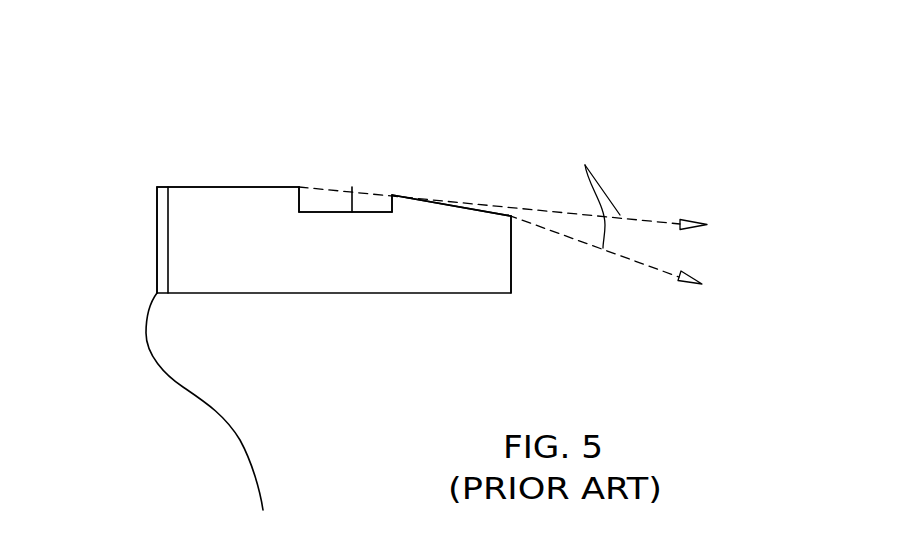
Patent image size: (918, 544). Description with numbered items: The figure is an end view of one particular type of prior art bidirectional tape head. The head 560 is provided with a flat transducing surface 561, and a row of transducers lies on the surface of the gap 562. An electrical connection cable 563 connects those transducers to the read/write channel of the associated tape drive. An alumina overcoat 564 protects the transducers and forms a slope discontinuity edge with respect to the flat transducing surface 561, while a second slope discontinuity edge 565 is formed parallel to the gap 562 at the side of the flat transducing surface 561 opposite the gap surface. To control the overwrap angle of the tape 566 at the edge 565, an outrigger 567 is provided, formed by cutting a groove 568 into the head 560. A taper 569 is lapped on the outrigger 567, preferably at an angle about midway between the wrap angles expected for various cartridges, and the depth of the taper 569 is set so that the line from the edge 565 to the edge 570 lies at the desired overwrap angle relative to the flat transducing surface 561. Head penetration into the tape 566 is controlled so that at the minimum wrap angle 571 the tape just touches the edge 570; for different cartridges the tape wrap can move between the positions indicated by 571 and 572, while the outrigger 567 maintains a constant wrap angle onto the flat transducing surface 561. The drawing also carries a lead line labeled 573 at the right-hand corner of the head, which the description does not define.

The head 560 is at (405, 293).
The flat transducing surface 561 is at (245, 187).
The gap 562 is at (165, 188).
The electrical connection cable 563 is at (146, 333).
The alumina overcoat 564 is at (157, 234).
The slope discontinuity edge 565 is at (299, 202).
The tape 566 is at (585, 165).
The outrigger 567 is at (391, 195).
The groove 568 is at (352, 187).
The taper 569 is at (438, 203).
The edge 570 is at (391, 212).
The minimum wrap angle 571 is at (524, 212).
The maximum wrap position 572 is at (624, 255).
The exit edge 573 is at (510, 216).